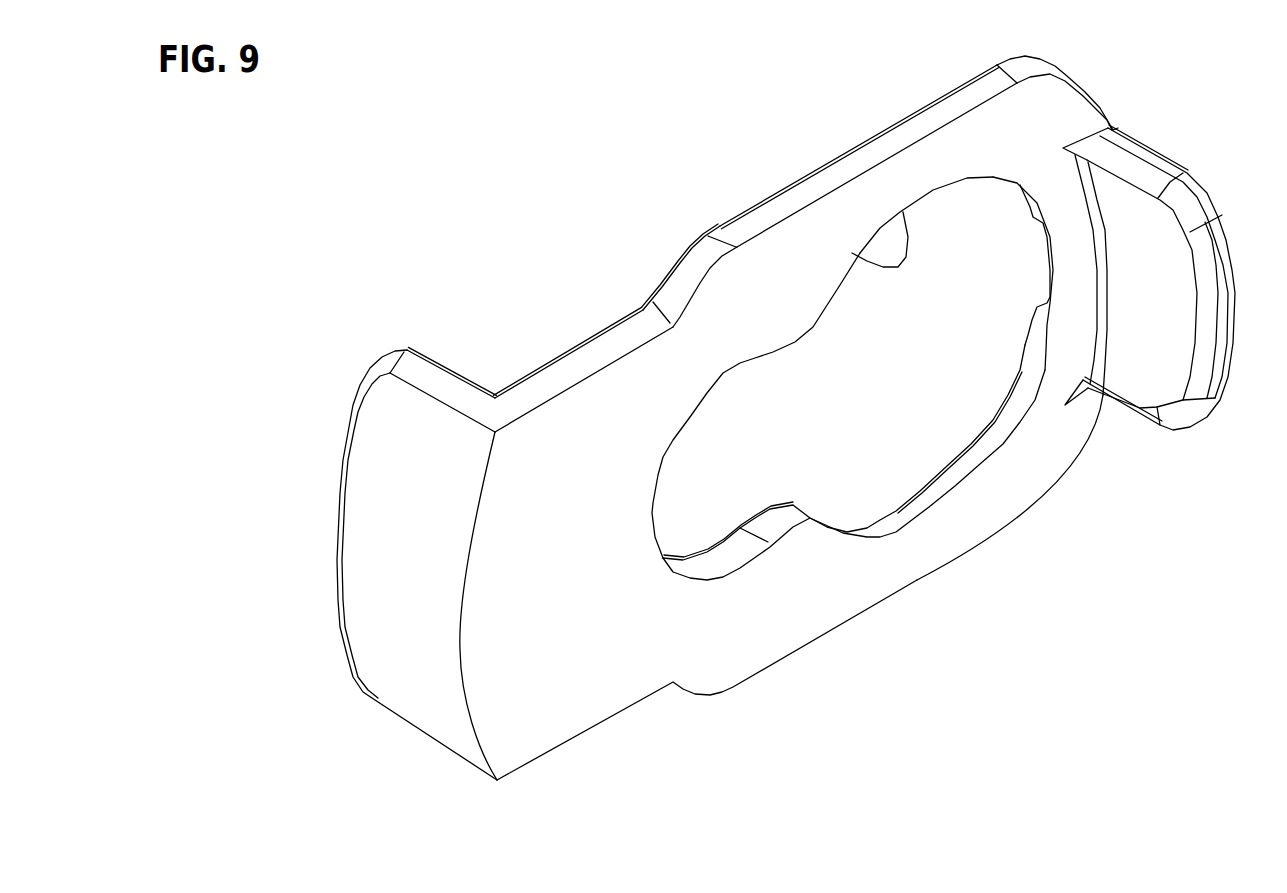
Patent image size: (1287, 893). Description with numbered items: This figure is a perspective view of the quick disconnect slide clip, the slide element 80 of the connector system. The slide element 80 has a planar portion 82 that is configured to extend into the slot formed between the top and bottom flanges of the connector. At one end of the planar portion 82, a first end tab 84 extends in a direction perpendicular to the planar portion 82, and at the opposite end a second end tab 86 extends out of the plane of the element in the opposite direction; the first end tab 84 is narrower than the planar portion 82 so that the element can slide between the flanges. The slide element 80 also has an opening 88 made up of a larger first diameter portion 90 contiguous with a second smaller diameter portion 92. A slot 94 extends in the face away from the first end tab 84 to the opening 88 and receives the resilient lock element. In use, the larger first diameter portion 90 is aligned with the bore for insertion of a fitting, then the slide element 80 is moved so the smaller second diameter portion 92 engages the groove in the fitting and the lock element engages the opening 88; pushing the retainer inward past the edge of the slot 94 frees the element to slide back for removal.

The slide element 80 is at (1012, 580).
The planar portion 82 is at (723, 288).
The first end tab 84 is at (390, 420).
The second end tab 86 is at (1147, 383).
The opening 88 is at (938, 422).
The larger first diameter portion 90 is at (872, 263).
The second smaller diameter portion 92 is at (668, 452).
The slot 94 is at (1037, 265).